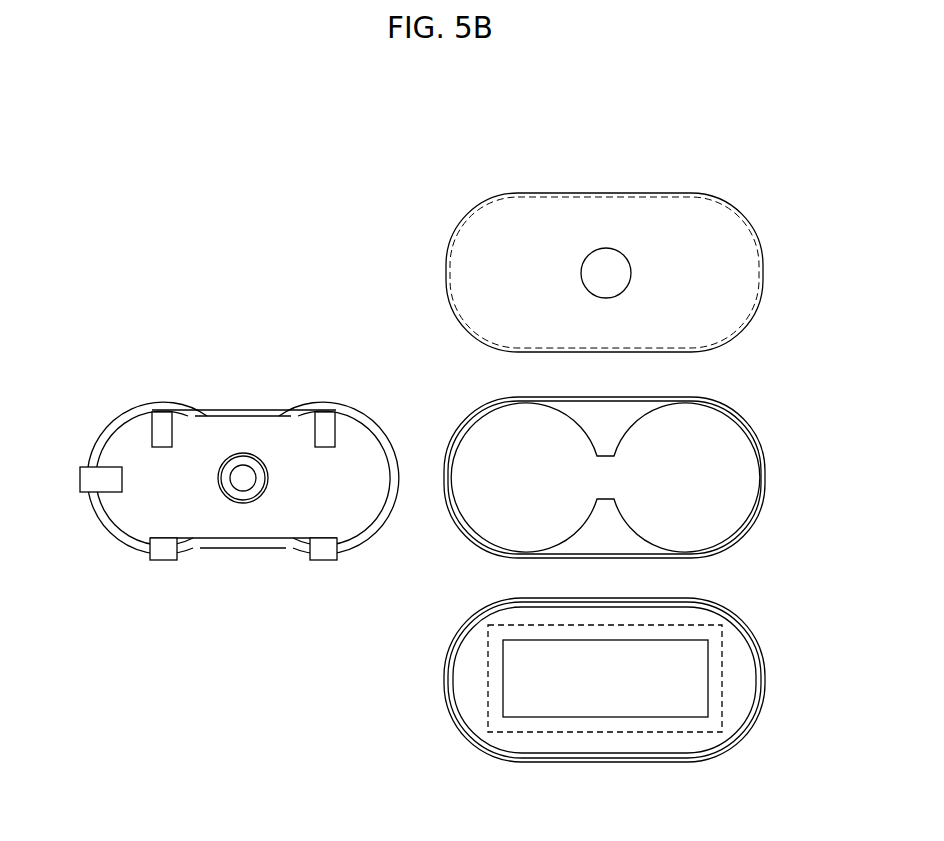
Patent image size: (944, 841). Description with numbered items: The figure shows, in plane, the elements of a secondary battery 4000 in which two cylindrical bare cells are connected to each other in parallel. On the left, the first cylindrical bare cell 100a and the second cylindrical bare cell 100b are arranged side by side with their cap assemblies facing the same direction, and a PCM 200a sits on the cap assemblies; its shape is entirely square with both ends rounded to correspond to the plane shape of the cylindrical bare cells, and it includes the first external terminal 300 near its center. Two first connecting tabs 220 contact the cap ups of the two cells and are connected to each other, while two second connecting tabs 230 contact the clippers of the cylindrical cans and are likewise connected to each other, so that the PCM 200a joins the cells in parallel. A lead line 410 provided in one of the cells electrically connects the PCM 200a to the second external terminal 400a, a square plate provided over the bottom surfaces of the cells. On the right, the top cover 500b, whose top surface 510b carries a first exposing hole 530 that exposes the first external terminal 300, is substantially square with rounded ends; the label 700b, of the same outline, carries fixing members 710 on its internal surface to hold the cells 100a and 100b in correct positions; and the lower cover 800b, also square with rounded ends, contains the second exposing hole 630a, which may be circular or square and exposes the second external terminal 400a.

The secondary battery 4000 is at (128, 194).
The first cylindrical bare cell 100a is at (89, 422).
The second cylindrical bare cell 100b is at (399, 422).
The PCM 200a is at (252, 414).
The second external terminal 400a is at (215, 408).
The first connecting tab 220 is at (158, 413).
The second connecting tab 230 is at (162, 561).
The lead line 410 is at (82, 480).
The first external terminal 300 is at (245, 485).
The top cover 500b is at (647, 249).
The top surface 510b is at (553, 193).
The first exposing hole 530 is at (606, 253).
The label 700b is at (645, 487).
The fixing members 710 is at (610, 443).
The lower cover 800b is at (645, 703).
The second exposing hole 630a is at (622, 700).